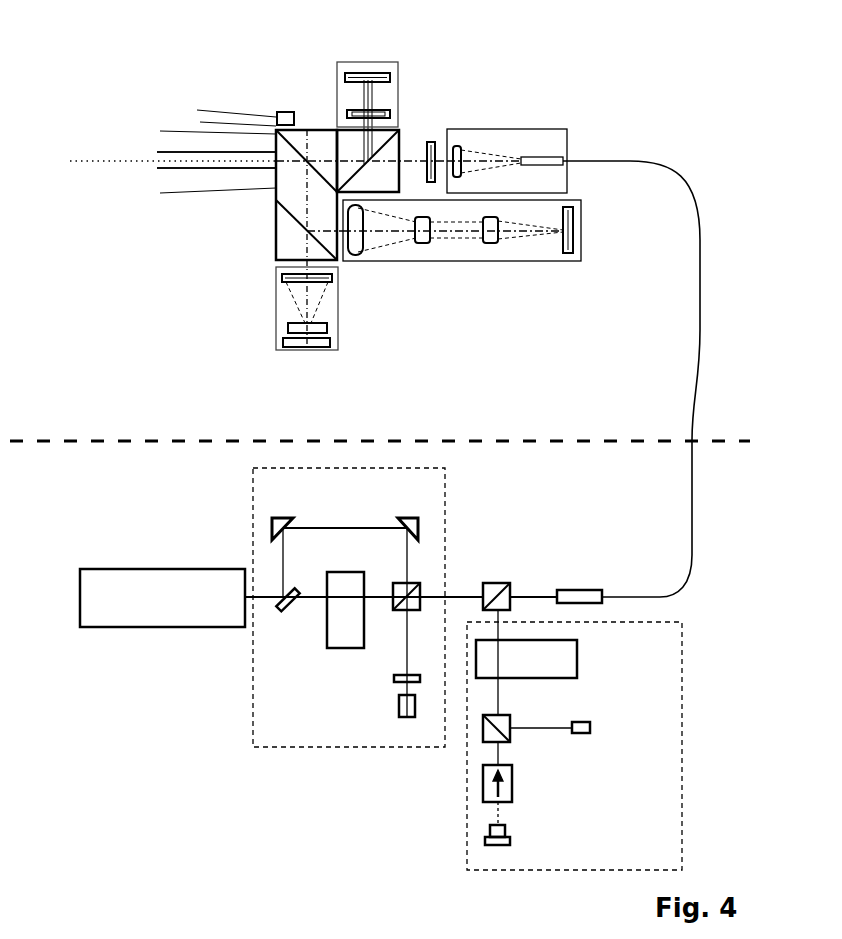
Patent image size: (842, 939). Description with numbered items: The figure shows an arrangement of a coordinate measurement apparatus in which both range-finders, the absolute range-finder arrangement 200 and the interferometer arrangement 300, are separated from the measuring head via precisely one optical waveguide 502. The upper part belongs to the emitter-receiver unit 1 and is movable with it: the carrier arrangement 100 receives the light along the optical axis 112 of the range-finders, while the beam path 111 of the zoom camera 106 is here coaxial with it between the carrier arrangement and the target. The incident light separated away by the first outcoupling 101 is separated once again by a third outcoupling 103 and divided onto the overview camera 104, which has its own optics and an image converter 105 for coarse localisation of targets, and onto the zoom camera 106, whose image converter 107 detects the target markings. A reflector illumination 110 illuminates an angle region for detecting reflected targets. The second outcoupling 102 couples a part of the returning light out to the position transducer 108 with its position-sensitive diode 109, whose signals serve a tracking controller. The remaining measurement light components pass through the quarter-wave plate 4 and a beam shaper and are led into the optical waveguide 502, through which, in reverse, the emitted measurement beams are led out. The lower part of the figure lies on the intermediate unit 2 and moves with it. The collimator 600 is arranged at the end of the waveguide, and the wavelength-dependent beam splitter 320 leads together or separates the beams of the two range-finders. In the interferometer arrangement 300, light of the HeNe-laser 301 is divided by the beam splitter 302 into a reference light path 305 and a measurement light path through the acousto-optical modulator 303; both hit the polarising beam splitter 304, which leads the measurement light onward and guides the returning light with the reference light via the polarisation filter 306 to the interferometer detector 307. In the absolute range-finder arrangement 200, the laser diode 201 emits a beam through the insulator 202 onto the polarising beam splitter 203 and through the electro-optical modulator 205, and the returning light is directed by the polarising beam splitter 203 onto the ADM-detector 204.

The emitter-receiver unit 1 is at (46, 408).
The intermediate unit 2 is at (48, 495).
The quarter-wave plate 4 is at (431, 142).
The carrier arrangement 100 is at (133, 367).
The first outcoupling 101 is at (305, 130).
The second outcoupling 102 is at (400, 130).
The third outcoupling 103 is at (288, 242).
The overview camera 104 is at (282, 305).
The image converter 105 is at (293, 350).
The zoom camera 106 is at (517, 129).
The image converter 107 is at (567, 270).
The position transducer 108 is at (337, 80).
The position-sensitive diode 109 is at (357, 72).
The reflector illumination 110 is at (278, 112).
The optical axis of the zoom camera 111 is at (120, 158).
The optical axis of the range-finders 112 is at (120, 158).
The absolute range-finder arrangement 200 is at (668, 653).
The laser diode 201 is at (510, 840).
The insulator 202 is at (512, 790).
The polarising beam splitter 203 is at (512, 730).
The ADM-detector 204 is at (590, 728).
The electro-optical modulator 205 is at (572, 668).
The interferometer arrangement 300 is at (432, 498).
The HeNe-laser 301 is at (145, 627).
The beam splitter 302 is at (296, 591).
The acousto-optical modulator 303 is at (333, 637).
The polarising beam splitter 304 is at (412, 585).
The reference light path 305 is at (318, 528).
The polarisation filter 306 is at (394, 678).
The interferometer detector 307 is at (399, 708).
The wavelength-dependent beam splitter 320 is at (510, 584).
The optical waveguide 502 is at (691, 401).
The collimator 600 is at (575, 596).